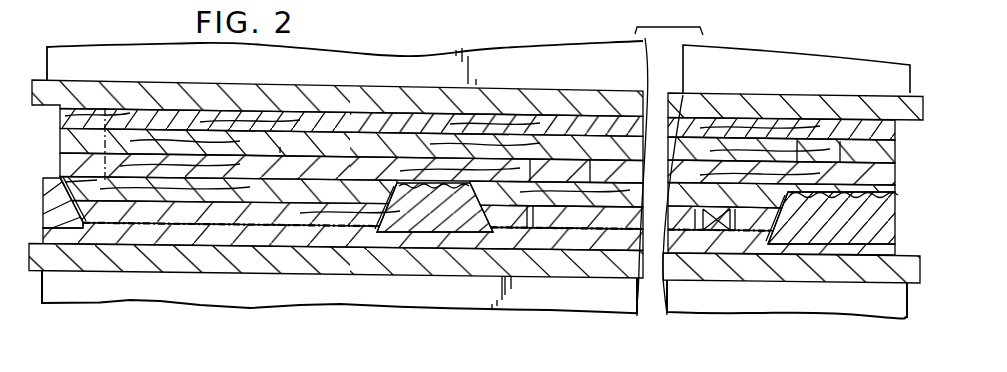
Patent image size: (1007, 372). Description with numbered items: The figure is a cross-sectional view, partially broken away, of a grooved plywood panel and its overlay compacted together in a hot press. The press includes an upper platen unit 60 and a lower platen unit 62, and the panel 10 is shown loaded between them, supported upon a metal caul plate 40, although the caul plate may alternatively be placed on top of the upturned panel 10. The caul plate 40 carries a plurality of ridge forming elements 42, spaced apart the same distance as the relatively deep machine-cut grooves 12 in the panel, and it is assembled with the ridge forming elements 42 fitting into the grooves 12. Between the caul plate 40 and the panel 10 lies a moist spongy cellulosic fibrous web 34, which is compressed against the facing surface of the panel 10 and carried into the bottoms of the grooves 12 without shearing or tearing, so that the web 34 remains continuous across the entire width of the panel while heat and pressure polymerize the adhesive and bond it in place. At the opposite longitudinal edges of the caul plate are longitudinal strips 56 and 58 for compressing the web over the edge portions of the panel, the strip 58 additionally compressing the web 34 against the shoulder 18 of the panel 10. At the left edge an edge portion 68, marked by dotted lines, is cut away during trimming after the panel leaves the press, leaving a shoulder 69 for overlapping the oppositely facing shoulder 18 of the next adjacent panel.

The plywood panel 10 is at (893, 153).
The grooves 12 is at (495, 170).
The shoulder 18 is at (880, 200).
The cellulosic fibrous web 34 is at (571, 233).
The caul plate 40 is at (258, 240).
The ridge forming elements 42 is at (413, 225).
The longitudinal strip 56 is at (63, 178).
The longitudinal strip 58 is at (886, 230).
The upper platen unit 60 is at (388, 56).
The lower platen unit 62 is at (473, 297).
The edge portion 68 is at (72, 143).
The shoulder 69 is at (100, 190).